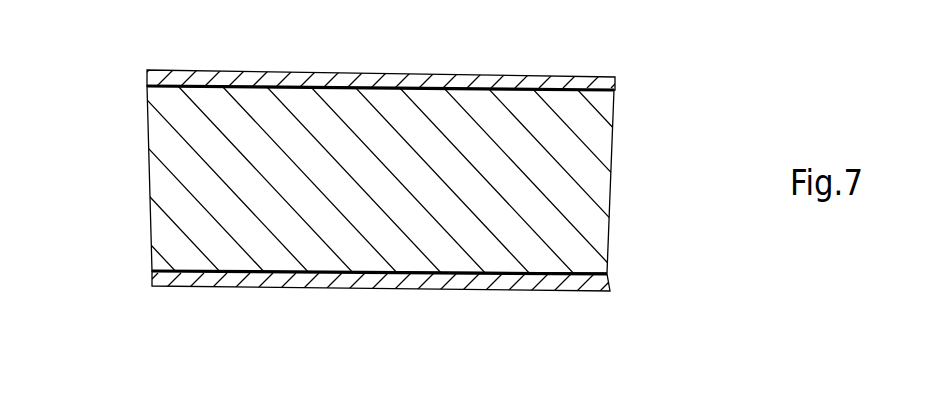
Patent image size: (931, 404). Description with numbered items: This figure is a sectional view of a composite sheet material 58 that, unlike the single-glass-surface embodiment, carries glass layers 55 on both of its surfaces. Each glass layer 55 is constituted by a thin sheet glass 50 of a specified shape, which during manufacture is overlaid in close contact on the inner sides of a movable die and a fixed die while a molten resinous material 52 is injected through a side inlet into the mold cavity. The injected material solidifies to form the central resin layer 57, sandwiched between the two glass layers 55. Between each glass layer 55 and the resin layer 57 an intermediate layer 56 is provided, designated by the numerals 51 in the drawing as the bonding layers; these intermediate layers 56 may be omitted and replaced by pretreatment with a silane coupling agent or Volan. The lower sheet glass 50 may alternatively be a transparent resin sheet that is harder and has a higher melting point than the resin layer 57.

The glass layer 55 is at (264, 86).
The thin sheet glass 50 is at (381, 179).
The intermediate layer 56 is at (508, 87).
The adhesive layer 51 is at (403, 179).
The resin layer 57 is at (163, 128).
The molten resinous material 52 is at (398, 181).
The composite sheet material 58 is at (398, 179).